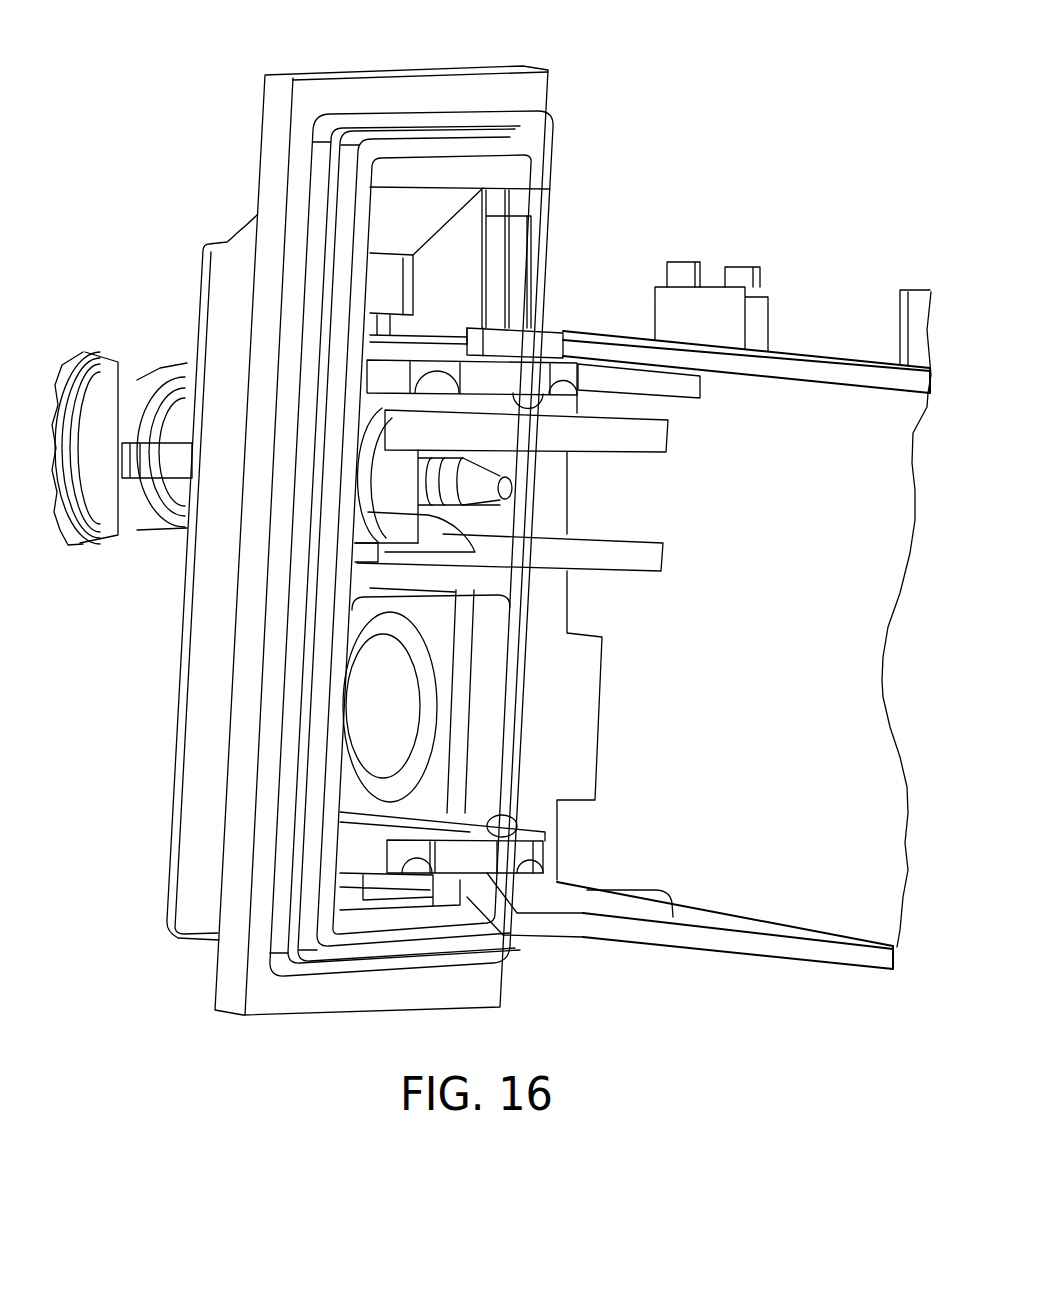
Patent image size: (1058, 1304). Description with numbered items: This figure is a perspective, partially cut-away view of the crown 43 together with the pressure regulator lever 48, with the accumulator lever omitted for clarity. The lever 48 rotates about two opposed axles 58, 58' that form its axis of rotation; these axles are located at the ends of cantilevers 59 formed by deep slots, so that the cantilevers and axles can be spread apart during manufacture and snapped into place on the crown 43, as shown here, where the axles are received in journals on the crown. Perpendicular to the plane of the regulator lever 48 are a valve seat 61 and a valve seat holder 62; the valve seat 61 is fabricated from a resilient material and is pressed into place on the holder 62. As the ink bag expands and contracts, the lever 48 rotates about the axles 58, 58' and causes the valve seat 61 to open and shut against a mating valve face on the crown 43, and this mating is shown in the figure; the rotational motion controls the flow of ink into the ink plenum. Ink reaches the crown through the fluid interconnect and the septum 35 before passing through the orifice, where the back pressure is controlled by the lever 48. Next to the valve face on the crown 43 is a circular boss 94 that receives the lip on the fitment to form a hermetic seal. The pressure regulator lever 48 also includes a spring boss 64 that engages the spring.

The septum 35 is at (56, 376).
The crown 43 is at (417, 86).
The pressure regulator lever 48 is at (817, 367).
The axle 58 is at (481, 351).
The axle 58' is at (463, 715).
The cantilever 59 is at (503, 347).
The valve seat 61 is at (387, 477).
The valve seat holder 62 is at (550, 433).
The spring boss 64 is at (684, 270).
The circular boss 94 is at (375, 712).